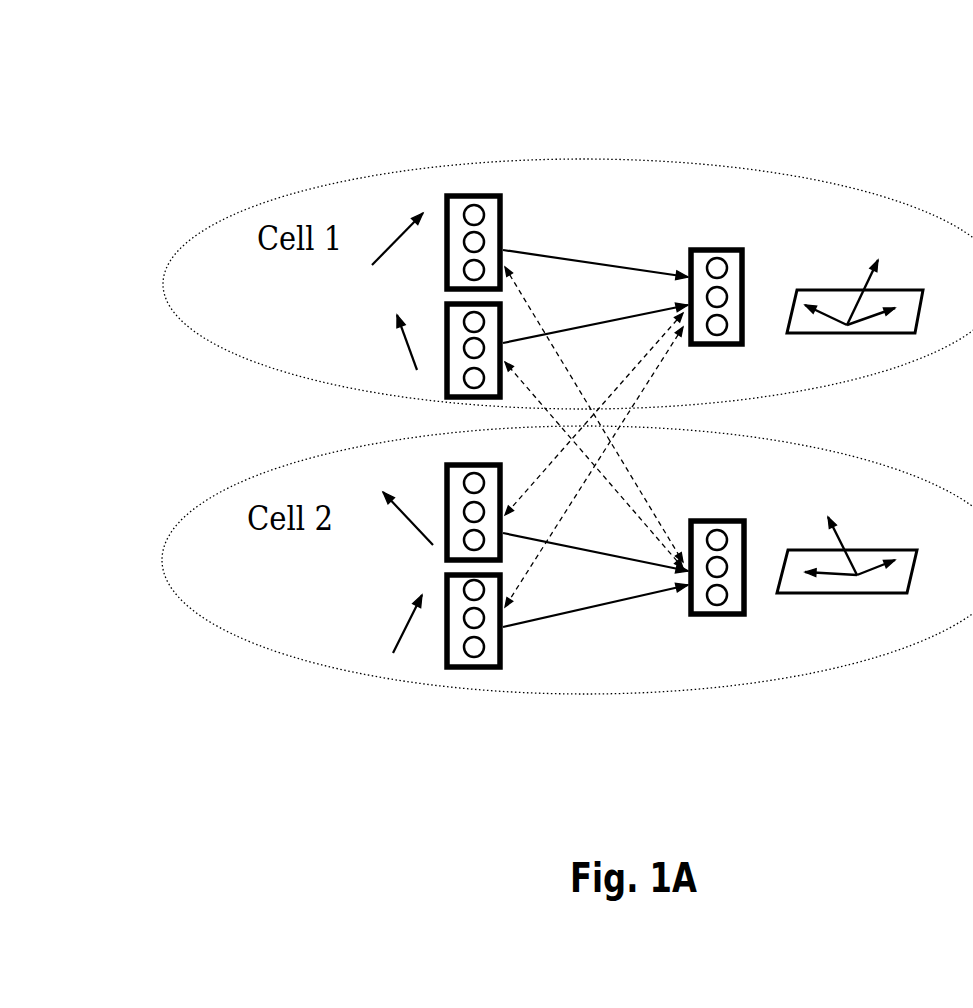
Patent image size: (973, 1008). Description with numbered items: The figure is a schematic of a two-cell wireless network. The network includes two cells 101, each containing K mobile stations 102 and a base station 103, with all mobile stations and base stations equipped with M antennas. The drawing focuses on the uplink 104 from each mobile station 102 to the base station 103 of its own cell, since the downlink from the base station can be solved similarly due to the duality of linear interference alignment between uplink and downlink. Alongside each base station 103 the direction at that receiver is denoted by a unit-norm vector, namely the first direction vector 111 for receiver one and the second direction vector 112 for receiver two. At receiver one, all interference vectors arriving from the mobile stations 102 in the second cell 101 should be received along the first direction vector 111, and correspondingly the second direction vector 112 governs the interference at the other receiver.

The cell 101 is at (798, 178).
The mobile station 102 is at (505, 202).
The base station 103 is at (712, 248).
The uplink 104 is at (600, 260).
The direction vector u1 111 is at (870, 282).
The direction vector u2 112 is at (843, 547).